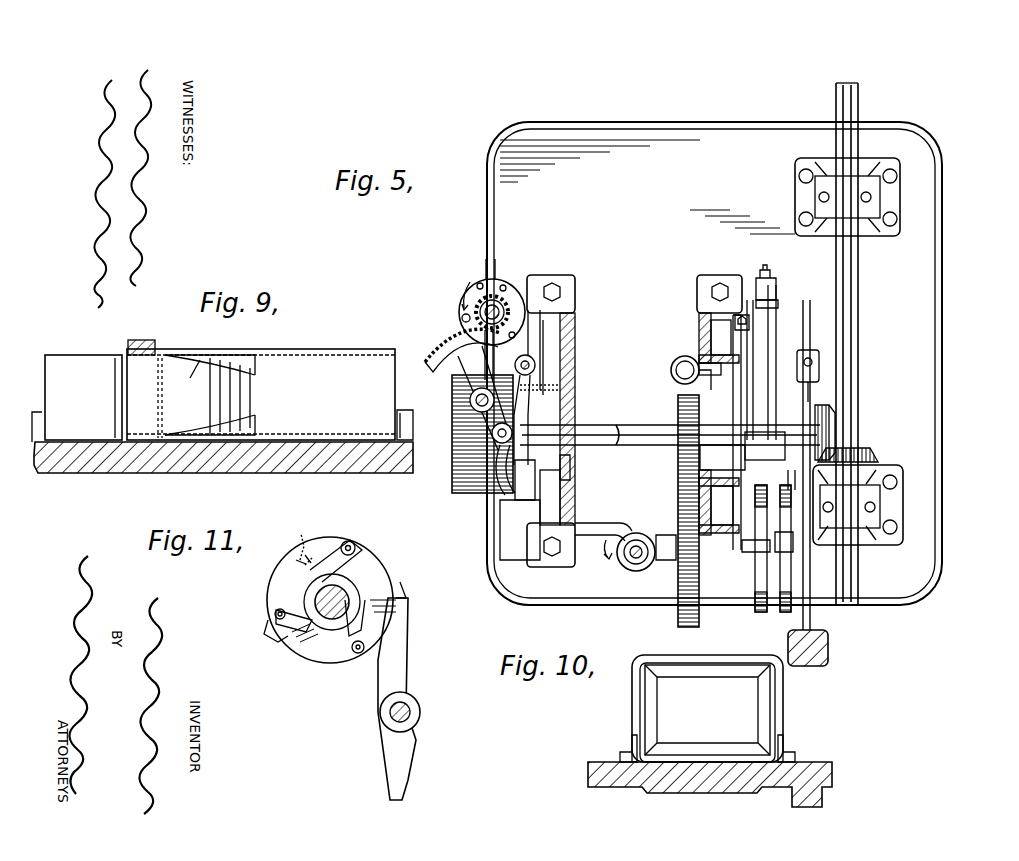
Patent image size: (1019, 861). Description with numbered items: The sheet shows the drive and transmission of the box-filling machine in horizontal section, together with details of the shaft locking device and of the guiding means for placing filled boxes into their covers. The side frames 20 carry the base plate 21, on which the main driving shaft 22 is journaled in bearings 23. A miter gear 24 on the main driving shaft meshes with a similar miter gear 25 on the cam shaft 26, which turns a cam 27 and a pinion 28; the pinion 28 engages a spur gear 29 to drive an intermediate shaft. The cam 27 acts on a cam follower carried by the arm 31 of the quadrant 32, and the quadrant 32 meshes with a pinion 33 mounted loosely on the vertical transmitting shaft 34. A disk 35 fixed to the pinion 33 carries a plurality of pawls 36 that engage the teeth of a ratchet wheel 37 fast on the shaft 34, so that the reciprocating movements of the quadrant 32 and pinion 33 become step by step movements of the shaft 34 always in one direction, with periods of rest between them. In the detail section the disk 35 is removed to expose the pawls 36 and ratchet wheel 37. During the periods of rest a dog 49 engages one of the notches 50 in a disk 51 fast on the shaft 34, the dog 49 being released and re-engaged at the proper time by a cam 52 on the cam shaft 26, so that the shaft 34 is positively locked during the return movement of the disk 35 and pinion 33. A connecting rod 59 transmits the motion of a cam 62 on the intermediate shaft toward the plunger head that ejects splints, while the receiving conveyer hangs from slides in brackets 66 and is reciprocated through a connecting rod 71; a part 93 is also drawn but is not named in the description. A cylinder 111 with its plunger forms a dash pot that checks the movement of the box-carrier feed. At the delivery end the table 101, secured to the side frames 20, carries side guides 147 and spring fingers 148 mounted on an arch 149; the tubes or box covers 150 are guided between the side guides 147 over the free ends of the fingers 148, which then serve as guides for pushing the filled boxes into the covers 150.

In FIG. 5, the side frames 20 is at (575, 330).
In FIG. 5, the base plate 21 is at (714, 363).
In FIG. 5, the main driving shaft 22 is at (862, 330).
In FIG. 5, the bearings 23 is at (880, 196).
In FIG. 5, the miter gear 24 is at (875, 452).
In FIG. 5, the miter gear 25 is at (828, 420).
In FIG. 5, the cam shaft 26 is at (636, 440).
In FIG. 5, the cam 27 is at (460, 470).
In FIG. 5, the pinion 28 is at (676, 470).
In FIG. 5, the spur gear 29 is at (699, 615).
In FIG. 5, the arm 31 is at (492, 433).
In FIG. 5, the quadrant 32 is at (468, 389).
In FIG. 5, the pinion 33 is at (439, 328).
In FIG. 5, the vertical transmitting shaft 34 is at (478, 313).
In FIG. 11, the vertical transmitting shaft 34 is at (315, 600).
In FIG. 5, the disk 35 is at (508, 282).
In FIG. 11, the pawls 36 is at (358, 555).
In FIG. 11, the ratchet wheel 37 is at (355, 583).
In FIG. 5, the dog 49 is at (540, 335).
In FIG. 11, the dog 49 is at (408, 640).
In FIG. 11, the notches 50 is at (400, 598).
In FIG. 11, the disk 51 is at (282, 634).
In FIG. 5, the cam 52 is at (545, 420).
In FIG. 5, the connecting rod 59 is at (770, 272).
In FIG. 5, the cam 62 is at (785, 575).
In FIG. 5, the brackets 66 is at (792, 470).
In FIG. 5, the connecting rod 71 is at (766, 312).
In FIG. 5, the bar 93 is at (753, 330).
In FIG. 9, the table 101 is at (300, 473).
In FIG. 10, the table 101 is at (832, 775).
In FIG. 5, the cylinder 111 is at (671, 375).
In FIG. 9, the side guides 147 is at (405, 410).
In FIG. 10, the side guides 147 is at (630, 738).
In FIG. 9, the spring fingers 148 is at (210, 430).
In FIG. 10, the spring fingers 148 is at (758, 701).
In FIG. 9, the arch 149 is at (143, 340).
In FIG. 10, the arch 149 is at (780, 680).
In FIG. 9, the tubes or box covers 150 is at (322, 349).